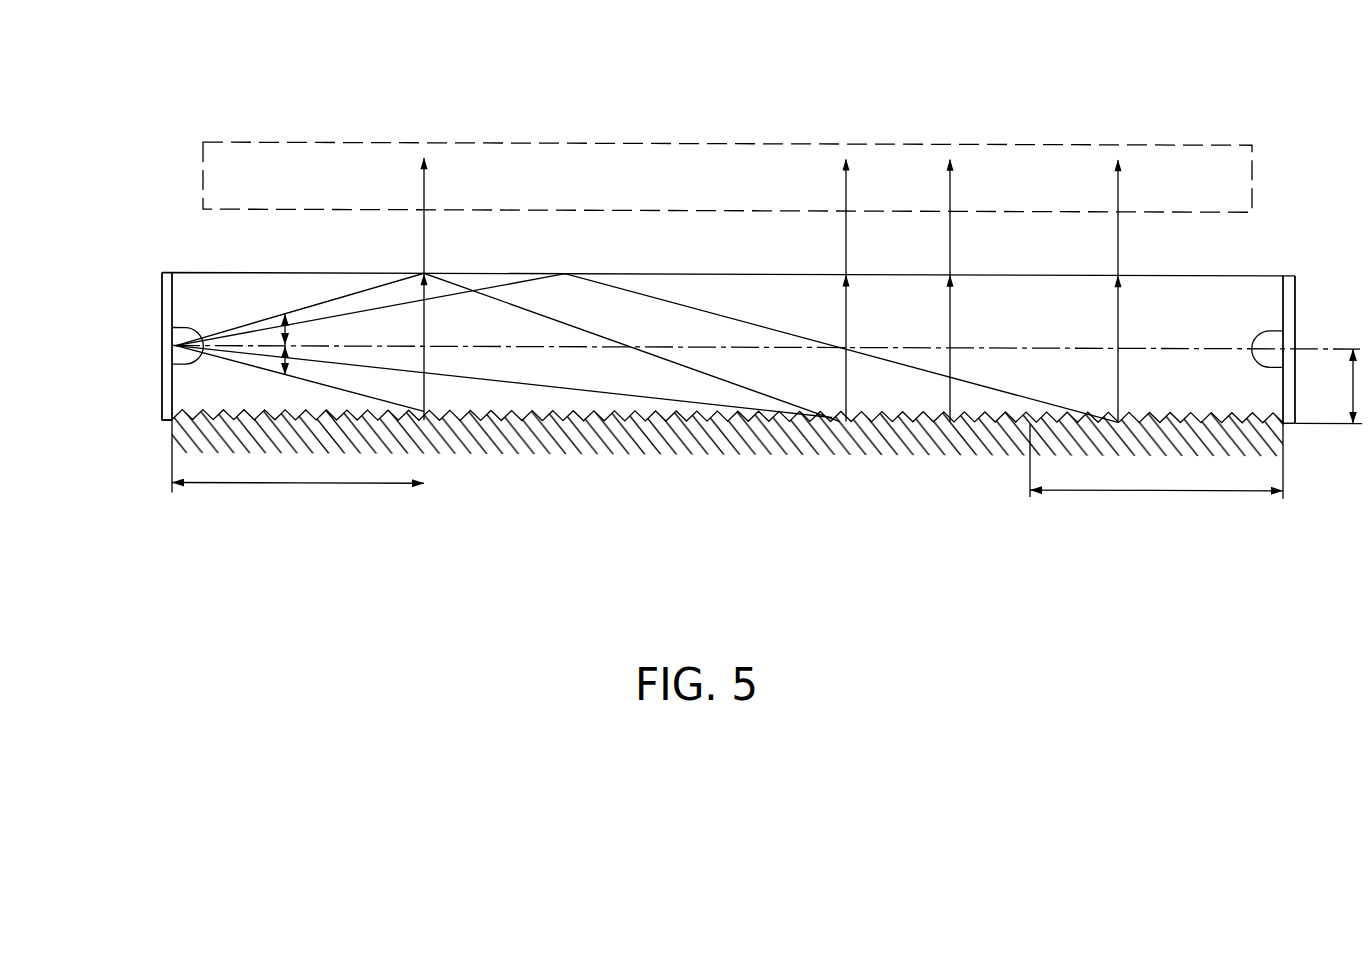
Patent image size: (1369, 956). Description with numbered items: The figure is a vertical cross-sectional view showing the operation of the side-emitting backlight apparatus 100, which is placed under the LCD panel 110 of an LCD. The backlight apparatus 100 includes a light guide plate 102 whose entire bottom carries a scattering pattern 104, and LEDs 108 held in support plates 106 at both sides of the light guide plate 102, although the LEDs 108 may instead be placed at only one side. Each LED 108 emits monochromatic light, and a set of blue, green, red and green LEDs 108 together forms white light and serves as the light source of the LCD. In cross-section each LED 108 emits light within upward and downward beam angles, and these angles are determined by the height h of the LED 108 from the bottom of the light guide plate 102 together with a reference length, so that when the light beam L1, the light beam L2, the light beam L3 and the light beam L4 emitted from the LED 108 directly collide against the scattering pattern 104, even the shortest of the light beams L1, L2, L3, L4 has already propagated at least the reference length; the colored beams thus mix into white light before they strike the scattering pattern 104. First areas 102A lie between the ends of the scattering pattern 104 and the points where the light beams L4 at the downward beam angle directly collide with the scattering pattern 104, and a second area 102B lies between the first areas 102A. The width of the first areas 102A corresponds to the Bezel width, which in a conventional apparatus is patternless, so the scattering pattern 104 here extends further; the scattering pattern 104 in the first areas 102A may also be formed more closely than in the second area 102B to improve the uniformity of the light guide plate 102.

The side-emitting backlight apparatus 100 is at (493, 55).
The light guide plate 102 is at (183, 260).
The first areas 102A is at (250, 452).
The second area 102B is at (675, 472).
The scattering pattern 104 is at (752, 418).
The support plates 106 is at (165, 368).
The LEDs 108 is at (182, 337).
The LCD panel 110 is at (1048, 142).
The light beam L1 is at (265, 317).
The light beam L2 is at (908, 372).
The light beam L3 is at (613, 387).
The light beam L4 is at (251, 367).
The height of LED h is at (1332, 386).